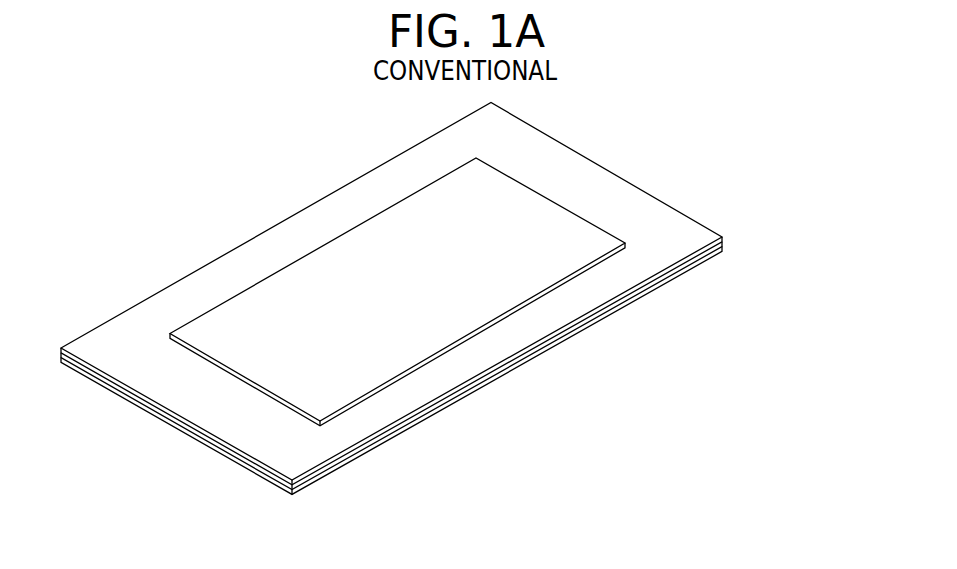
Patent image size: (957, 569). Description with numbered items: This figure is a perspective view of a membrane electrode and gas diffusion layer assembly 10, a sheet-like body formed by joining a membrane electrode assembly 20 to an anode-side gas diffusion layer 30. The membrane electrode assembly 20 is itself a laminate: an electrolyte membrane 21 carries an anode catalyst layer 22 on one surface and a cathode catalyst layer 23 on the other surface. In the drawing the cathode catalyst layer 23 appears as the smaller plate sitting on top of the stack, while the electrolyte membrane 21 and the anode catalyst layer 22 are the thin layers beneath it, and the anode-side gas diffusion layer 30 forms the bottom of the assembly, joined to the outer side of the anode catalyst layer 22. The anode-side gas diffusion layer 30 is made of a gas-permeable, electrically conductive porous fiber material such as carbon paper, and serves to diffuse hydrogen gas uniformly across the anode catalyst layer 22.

The membrane electrode and gas diffusion layer assembly 10 is at (463, 299).
The membrane electrode assembly 20 is at (442, 296).
The electrolyte membrane 21 is at (722, 238).
The anode catalyst layer 22 is at (725, 245).
The cathode catalyst layer 23 is at (610, 233).
The anode-side gas diffusion layer 30 is at (442, 371).